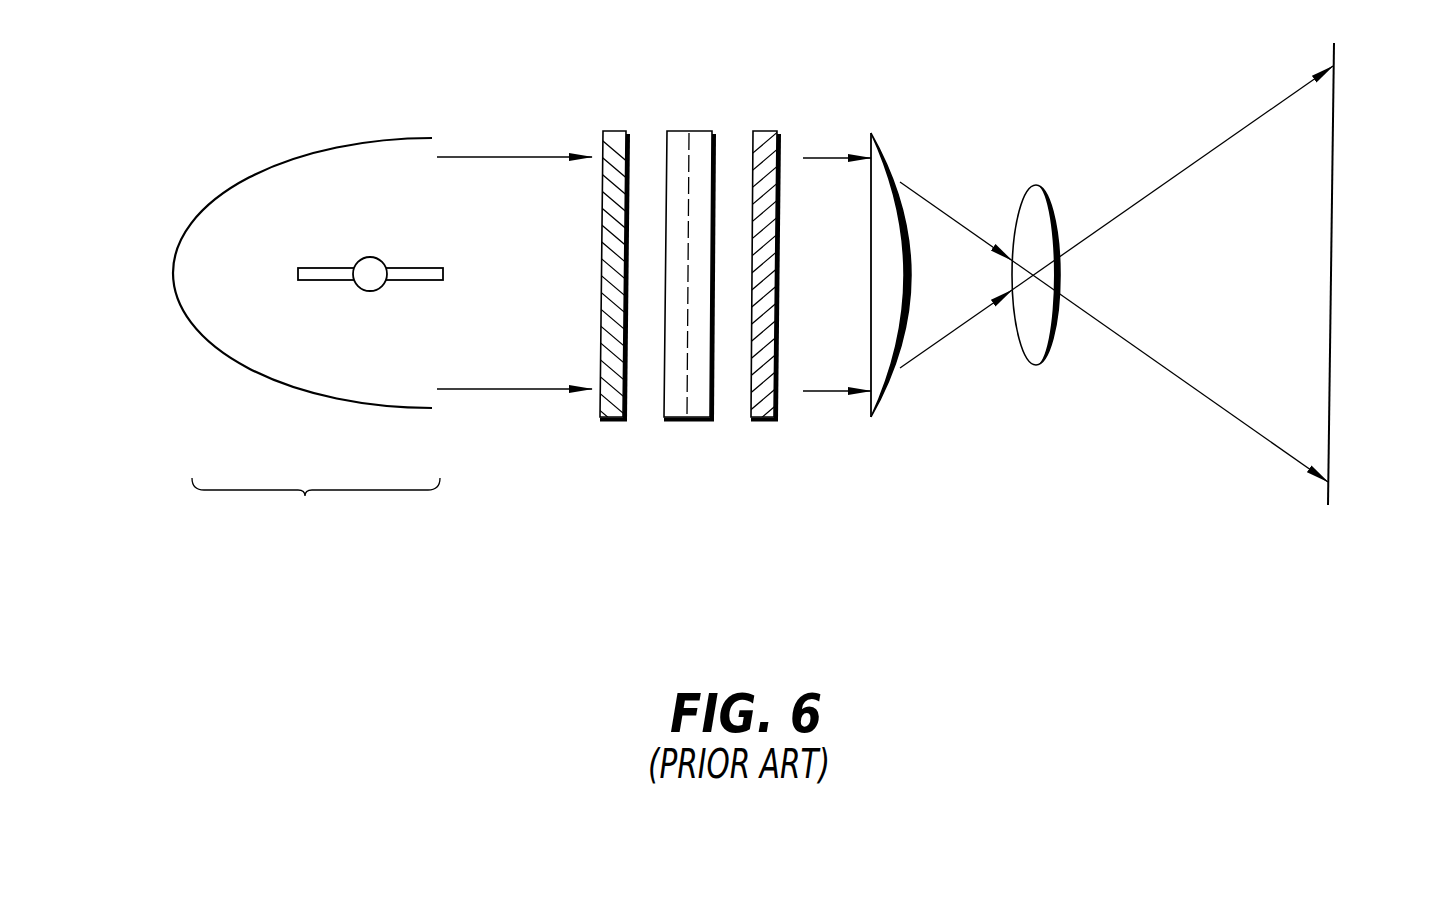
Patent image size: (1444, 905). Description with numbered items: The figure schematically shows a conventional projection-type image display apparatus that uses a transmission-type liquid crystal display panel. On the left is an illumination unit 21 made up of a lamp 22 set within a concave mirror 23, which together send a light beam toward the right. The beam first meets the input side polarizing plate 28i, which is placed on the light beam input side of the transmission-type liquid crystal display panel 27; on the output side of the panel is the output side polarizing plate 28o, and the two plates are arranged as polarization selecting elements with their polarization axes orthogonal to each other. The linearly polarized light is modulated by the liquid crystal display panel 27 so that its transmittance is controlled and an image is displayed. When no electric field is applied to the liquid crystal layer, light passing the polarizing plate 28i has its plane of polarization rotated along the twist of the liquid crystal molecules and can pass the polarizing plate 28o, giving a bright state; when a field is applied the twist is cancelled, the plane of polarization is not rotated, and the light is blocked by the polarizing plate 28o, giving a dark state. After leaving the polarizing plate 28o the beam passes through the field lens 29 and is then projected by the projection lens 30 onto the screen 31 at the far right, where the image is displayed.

The illumination unit 21 is at (305, 496).
The lamp 22 is at (413, 267).
The concave mirror 23 is at (308, 163).
The transmission-type liquid crystal display panel 27 is at (688, 422).
The input side polarizing plate 28i is at (613, 422).
The output side polarizing plate 28o is at (763, 422).
The field lens 29 is at (882, 417).
The projection lens 30 is at (1038, 368).
The screen 31 is at (1333, 273).